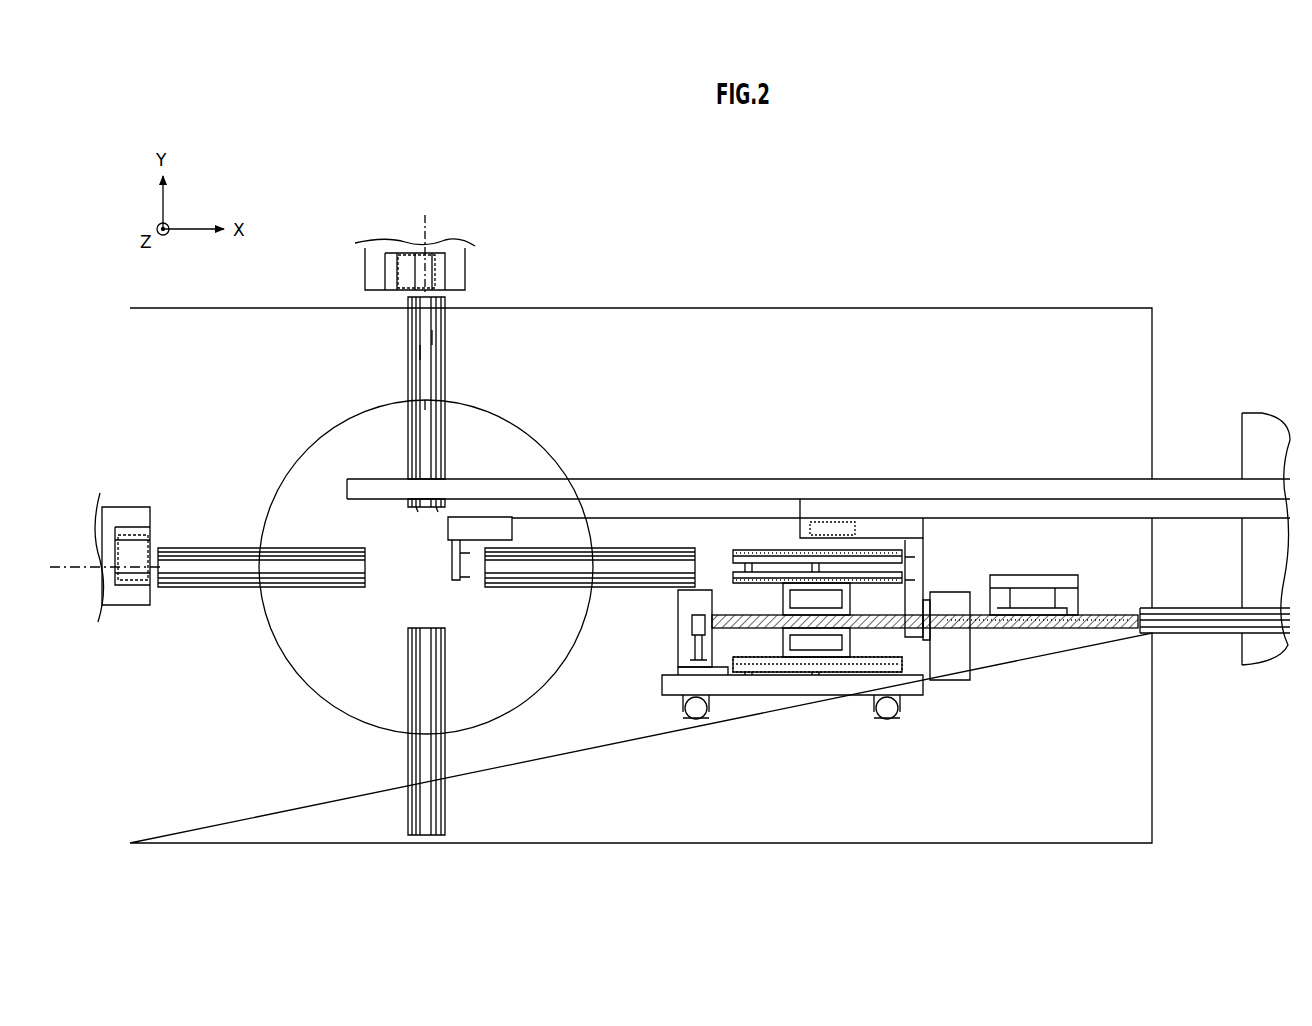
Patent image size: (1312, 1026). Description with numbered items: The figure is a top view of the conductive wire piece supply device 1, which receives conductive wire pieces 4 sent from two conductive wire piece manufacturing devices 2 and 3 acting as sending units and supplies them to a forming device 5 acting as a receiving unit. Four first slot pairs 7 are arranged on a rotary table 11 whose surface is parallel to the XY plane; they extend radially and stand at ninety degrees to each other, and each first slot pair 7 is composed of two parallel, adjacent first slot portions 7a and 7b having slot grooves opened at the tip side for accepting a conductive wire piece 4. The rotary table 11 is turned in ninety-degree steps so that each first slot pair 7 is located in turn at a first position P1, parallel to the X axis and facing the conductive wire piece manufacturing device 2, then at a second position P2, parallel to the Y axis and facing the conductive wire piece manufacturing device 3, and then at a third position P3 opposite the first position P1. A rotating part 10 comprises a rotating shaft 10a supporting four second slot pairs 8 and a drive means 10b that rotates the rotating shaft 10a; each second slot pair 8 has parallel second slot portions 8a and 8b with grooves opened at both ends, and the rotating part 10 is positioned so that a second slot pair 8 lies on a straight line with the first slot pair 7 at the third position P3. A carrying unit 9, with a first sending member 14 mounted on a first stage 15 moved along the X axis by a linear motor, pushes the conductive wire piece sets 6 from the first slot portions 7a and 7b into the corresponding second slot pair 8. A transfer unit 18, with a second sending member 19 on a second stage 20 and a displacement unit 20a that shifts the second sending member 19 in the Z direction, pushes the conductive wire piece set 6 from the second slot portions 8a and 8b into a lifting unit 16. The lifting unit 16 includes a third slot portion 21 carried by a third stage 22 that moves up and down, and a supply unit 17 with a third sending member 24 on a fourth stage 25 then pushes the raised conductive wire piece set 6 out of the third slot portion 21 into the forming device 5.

The conductive wire piece supply device 1 is at (788, 182).
The conductive wire piece manufacturing device 2 is at (110, 618).
The conductive wire piece manufacturing device 3 is at (489, 254).
The conductive wire piece 4 is at (110, 548).
The forming device 5 is at (1232, 392).
The conductive wire piece set 6 is at (445, 408).
The first slot pair 7 is at (521, 328).
The first slot portion 7a is at (440, 378).
The first slot portion 7b is at (440, 344).
The second slot pair 8 is at (777, 452).
The second slot portion 8a is at (766, 548).
The second slot portion 8b is at (790, 548).
The carrying unit 9 is at (440, 562).
The rotating part 10 is at (947, 694).
The rotating shaft 10a is at (852, 632).
The drive means 10b is at (957, 682).
The rotary table 11 is at (302, 456).
The first sending member 14 is at (465, 570).
The first stage 15 is at (446, 522).
The lifting unit 16 is at (1044, 650).
The supply unit 17 is at (947, 541).
The transfer unit 18 is at (656, 700).
The second sending member 19 is at (690, 620).
The second stage 20 is at (664, 675).
The displacement unit 20a is at (694, 648).
The third slot portion 21 is at (1010, 632).
The third stage 22 is at (1032, 604).
The third sending member 24 is at (935, 636).
The fourth stage 25 is at (860, 520).
The first position P1 is at (78, 578).
The second position P2 is at (428, 222).
The third position P3 is at (640, 565).